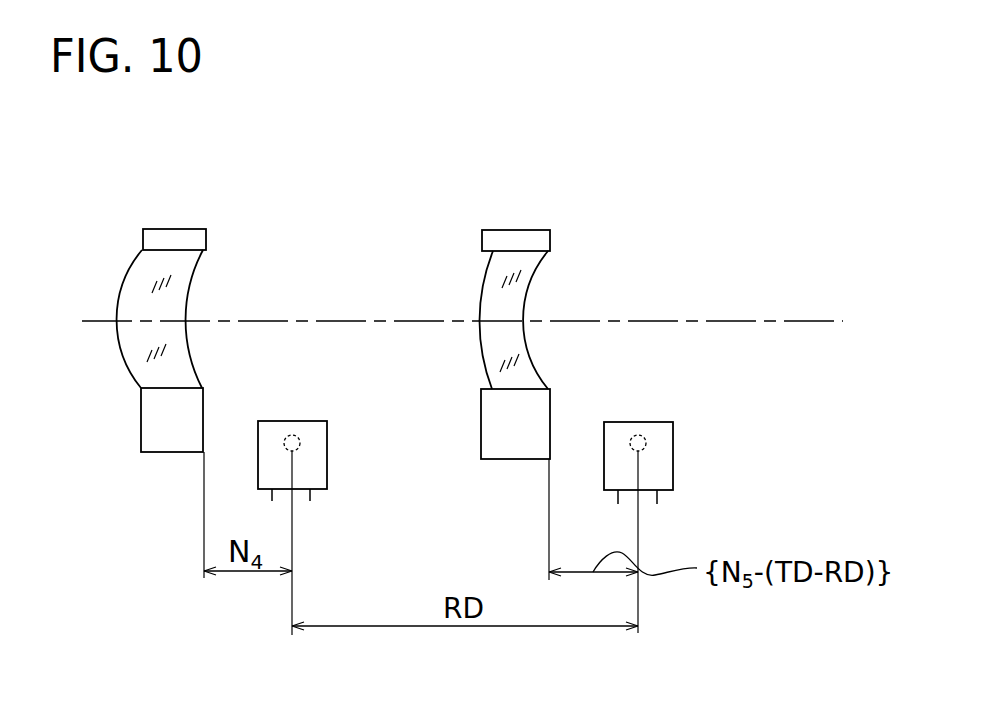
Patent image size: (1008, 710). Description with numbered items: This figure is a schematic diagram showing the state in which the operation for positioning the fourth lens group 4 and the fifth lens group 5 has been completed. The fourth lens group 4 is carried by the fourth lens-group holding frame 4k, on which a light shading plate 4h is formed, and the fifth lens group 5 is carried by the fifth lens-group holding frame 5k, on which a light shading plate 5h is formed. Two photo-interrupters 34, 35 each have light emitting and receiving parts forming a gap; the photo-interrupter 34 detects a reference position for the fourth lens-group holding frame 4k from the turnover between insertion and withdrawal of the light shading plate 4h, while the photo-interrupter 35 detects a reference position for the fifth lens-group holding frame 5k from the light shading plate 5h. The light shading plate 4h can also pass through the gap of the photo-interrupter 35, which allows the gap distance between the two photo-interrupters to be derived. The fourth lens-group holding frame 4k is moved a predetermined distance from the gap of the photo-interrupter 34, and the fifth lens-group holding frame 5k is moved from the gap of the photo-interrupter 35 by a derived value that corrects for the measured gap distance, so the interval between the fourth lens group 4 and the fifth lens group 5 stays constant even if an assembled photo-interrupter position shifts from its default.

The fourth lens group 4 is at (179, 273).
The fourth lens-group holding frame 4k is at (175, 238).
The light shading plate 4h is at (157, 420).
The fifth lens group 5 is at (522, 274).
The fifth lens-group holding frame 5k is at (517, 238).
The light shading plate 5h is at (497, 420).
The photo-interrupter 34 is at (312, 453).
The photo-interrupter 35 is at (658, 455).